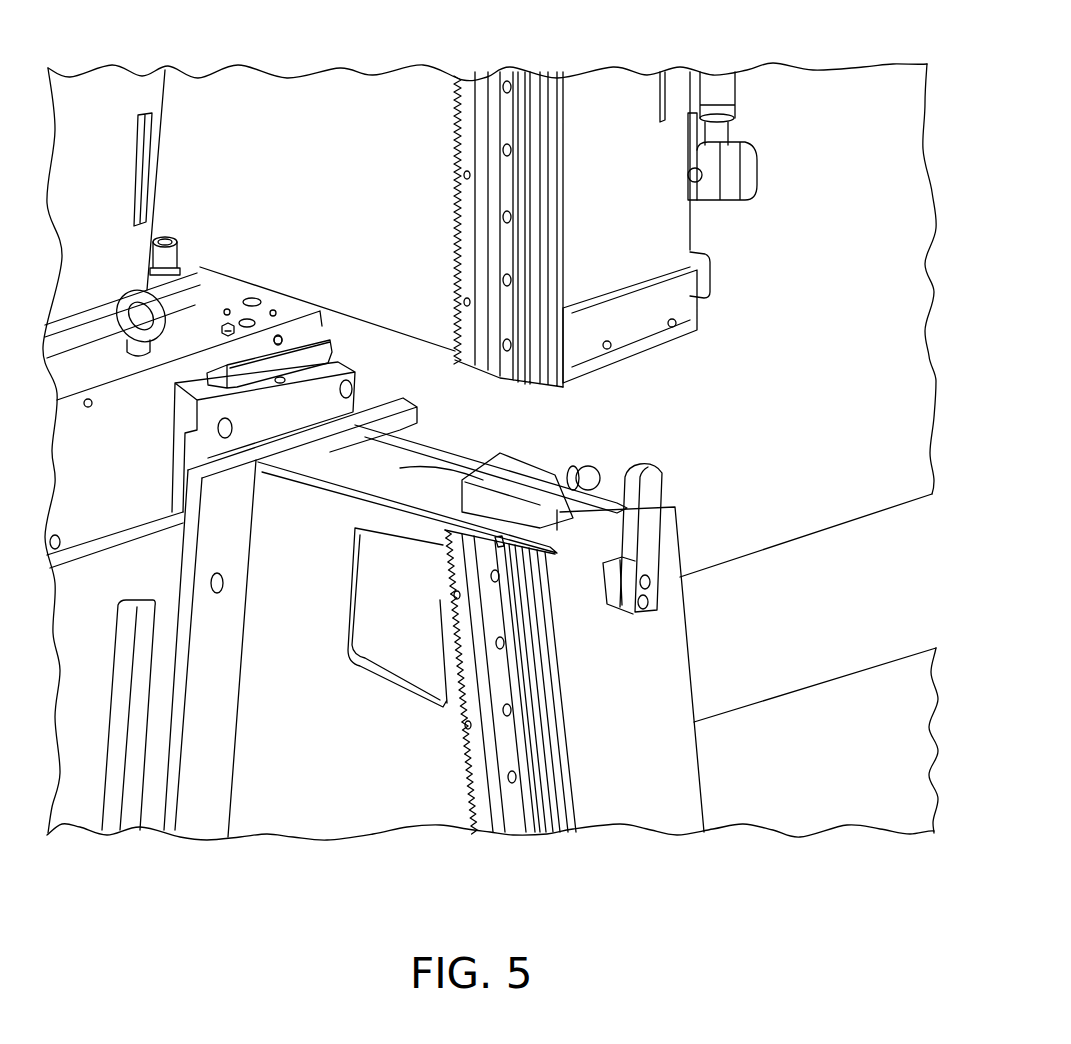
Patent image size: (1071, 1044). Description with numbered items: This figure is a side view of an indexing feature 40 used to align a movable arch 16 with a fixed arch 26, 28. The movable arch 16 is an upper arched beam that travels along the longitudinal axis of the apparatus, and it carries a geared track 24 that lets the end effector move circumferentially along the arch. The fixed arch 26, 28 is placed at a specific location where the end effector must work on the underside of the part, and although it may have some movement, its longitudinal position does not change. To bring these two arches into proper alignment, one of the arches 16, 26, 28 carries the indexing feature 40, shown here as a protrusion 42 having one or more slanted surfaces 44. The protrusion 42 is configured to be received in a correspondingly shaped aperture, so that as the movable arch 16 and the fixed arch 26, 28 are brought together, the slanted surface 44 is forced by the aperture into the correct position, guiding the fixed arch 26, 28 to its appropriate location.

The movable arch 16 is at (632, 98).
The geared track 24 is at (490, 165).
The fixed arch 26 is at (806, 690).
The fixed arch 28 is at (676, 783).
The indexing feature 40 is at (563, 492).
The protrusion 42 is at (557, 508).
The slanted surface 44 is at (487, 500).